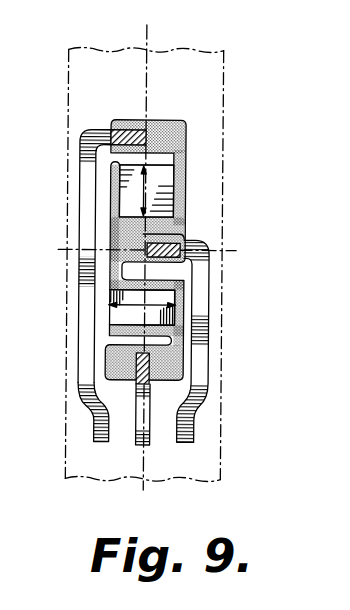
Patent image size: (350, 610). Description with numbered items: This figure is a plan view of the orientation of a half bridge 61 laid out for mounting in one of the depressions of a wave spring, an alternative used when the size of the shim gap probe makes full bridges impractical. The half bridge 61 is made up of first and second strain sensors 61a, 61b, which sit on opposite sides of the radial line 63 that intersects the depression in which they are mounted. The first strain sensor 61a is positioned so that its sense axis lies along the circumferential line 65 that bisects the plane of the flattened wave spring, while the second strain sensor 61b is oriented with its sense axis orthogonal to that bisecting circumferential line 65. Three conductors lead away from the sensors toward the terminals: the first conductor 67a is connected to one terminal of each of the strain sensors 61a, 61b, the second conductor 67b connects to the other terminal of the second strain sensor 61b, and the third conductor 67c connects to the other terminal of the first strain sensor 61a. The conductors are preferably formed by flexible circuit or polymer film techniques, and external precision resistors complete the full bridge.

The half bridge 61 is at (203, 228).
The first strain sensor 61a is at (166, 183).
The second strain sensor 61b is at (176, 297).
The radial line 63 is at (235, 250).
The circumferential line 65 is at (146, 32).
The first conductor 67a is at (192, 415).
The second conductor 67b is at (152, 440).
The third conductor 67c is at (96, 417).